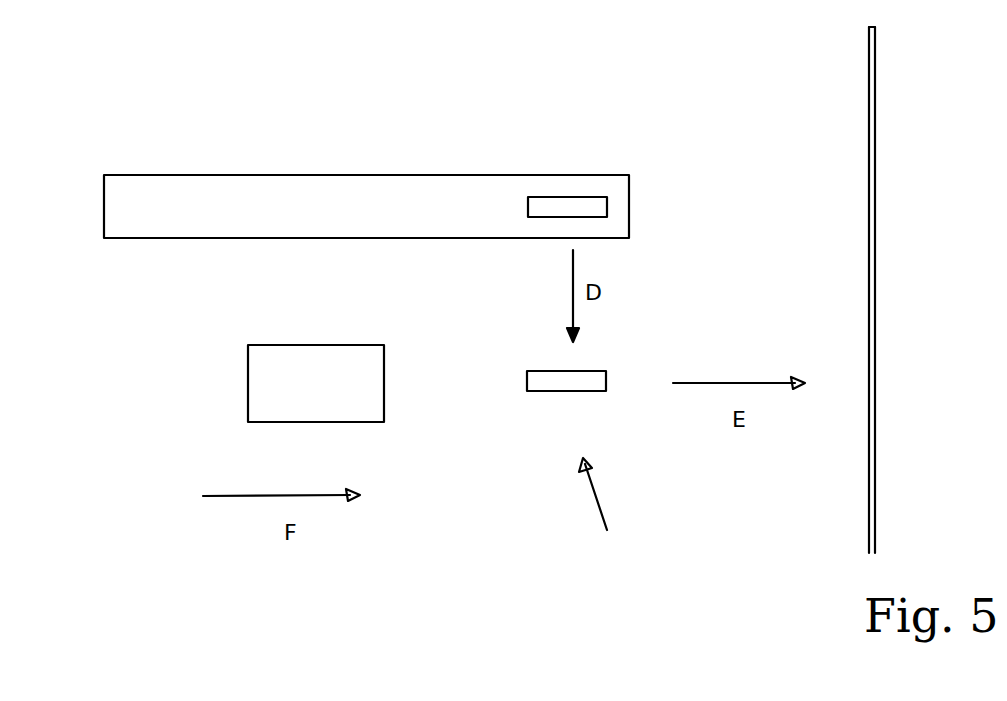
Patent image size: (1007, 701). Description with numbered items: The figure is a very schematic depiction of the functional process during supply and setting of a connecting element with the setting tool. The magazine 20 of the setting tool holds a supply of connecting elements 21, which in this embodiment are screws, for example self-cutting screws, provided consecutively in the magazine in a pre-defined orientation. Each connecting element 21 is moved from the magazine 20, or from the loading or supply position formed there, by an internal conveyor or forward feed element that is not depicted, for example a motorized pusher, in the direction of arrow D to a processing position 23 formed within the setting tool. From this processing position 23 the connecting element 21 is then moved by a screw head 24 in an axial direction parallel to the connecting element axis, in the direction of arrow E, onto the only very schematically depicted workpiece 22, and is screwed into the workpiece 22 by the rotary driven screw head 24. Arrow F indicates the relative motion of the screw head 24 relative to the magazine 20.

The magazine 20 is at (280, 200).
The connecting element 21 is at (560, 197).
The workpiece 22 is at (875, 247).
The processing position 23 is at (600, 515).
The screw head 24 is at (272, 398).